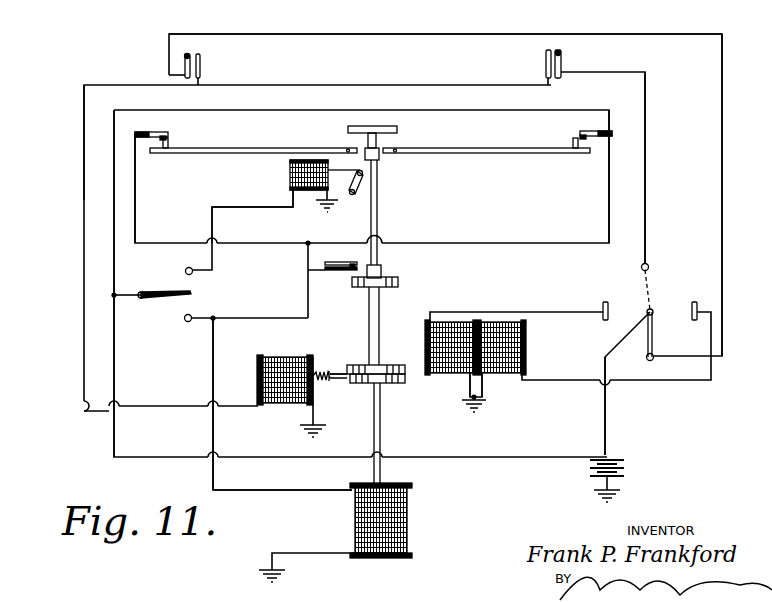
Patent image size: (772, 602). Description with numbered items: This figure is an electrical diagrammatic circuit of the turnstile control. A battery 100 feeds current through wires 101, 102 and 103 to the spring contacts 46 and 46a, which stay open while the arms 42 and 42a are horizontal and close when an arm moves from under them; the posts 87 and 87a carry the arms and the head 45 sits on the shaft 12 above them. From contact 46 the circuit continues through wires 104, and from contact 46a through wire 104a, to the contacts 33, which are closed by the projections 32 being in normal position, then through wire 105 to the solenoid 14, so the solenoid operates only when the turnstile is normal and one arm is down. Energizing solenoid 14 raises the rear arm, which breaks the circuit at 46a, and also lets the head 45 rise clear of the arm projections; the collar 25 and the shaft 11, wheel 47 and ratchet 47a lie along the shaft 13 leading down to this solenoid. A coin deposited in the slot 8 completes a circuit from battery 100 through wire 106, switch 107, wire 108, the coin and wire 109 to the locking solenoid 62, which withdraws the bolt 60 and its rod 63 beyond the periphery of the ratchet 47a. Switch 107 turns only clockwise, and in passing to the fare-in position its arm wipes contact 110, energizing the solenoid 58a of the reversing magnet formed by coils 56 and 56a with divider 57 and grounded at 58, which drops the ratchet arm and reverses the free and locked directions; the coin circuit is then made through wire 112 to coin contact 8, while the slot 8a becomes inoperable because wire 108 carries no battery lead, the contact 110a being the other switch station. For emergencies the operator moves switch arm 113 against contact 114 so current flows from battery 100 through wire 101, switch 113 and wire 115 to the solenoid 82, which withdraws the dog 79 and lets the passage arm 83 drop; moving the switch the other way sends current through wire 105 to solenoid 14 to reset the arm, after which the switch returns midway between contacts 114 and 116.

The coin slot 8 is at (189, 53).
The coin slot 8a is at (554, 51).
The shaft 11 is at (380, 300).
The shaft 12 is at (377, 200).
The shaft 13 is at (380, 436).
The solenoid 14 is at (405, 515).
The collar 25 is at (398, 283).
The projections 32 is at (381, 276).
The contacts 33 is at (340, 271).
The arm 42 is at (235, 148).
The arm 42a is at (480, 153).
The head 45 is at (397, 129).
The spring contact 46 is at (158, 132).
The spring contact 46a is at (590, 131).
The wheel 47 is at (352, 365).
The ratchet 47a is at (400, 381).
The coil 56 is at (426, 345).
The coil 56a is at (528, 345).
The coil divider 57 is at (497, 322).
The ground lead 58 is at (456, 373).
The solenoid 58a is at (505, 373).
The bolt 60 is at (330, 372).
The locking solenoid 62 is at (269, 405).
The rod 63 is at (322, 380).
The dog 79 is at (366, 170).
The solenoid 82 is at (310, 160).
The passage arm 83 is at (380, 150).
The post 87 is at (170, 147).
The post 87a is at (575, 148).
The battery 100 is at (626, 474).
The wire 101 is at (268, 458).
The wire 102 is at (114, 237).
The wire 103 is at (322, 110).
The wires 104 is at (135, 197).
The wire 104a is at (520, 243).
The wire 105 is at (213, 346).
The wire 106 is at (607, 421).
The switch 107 is at (653, 334).
The wire 108 is at (722, 170).
The wire 109 is at (84, 103).
The wiping contact 110 is at (604, 302).
The contact 110a is at (694, 302).
The wire 112 is at (645, 140).
The switch arm 113 is at (155, 280).
The contact 114 is at (193, 275).
The wire 115 is at (238, 207).
The contact 116 is at (185, 321).